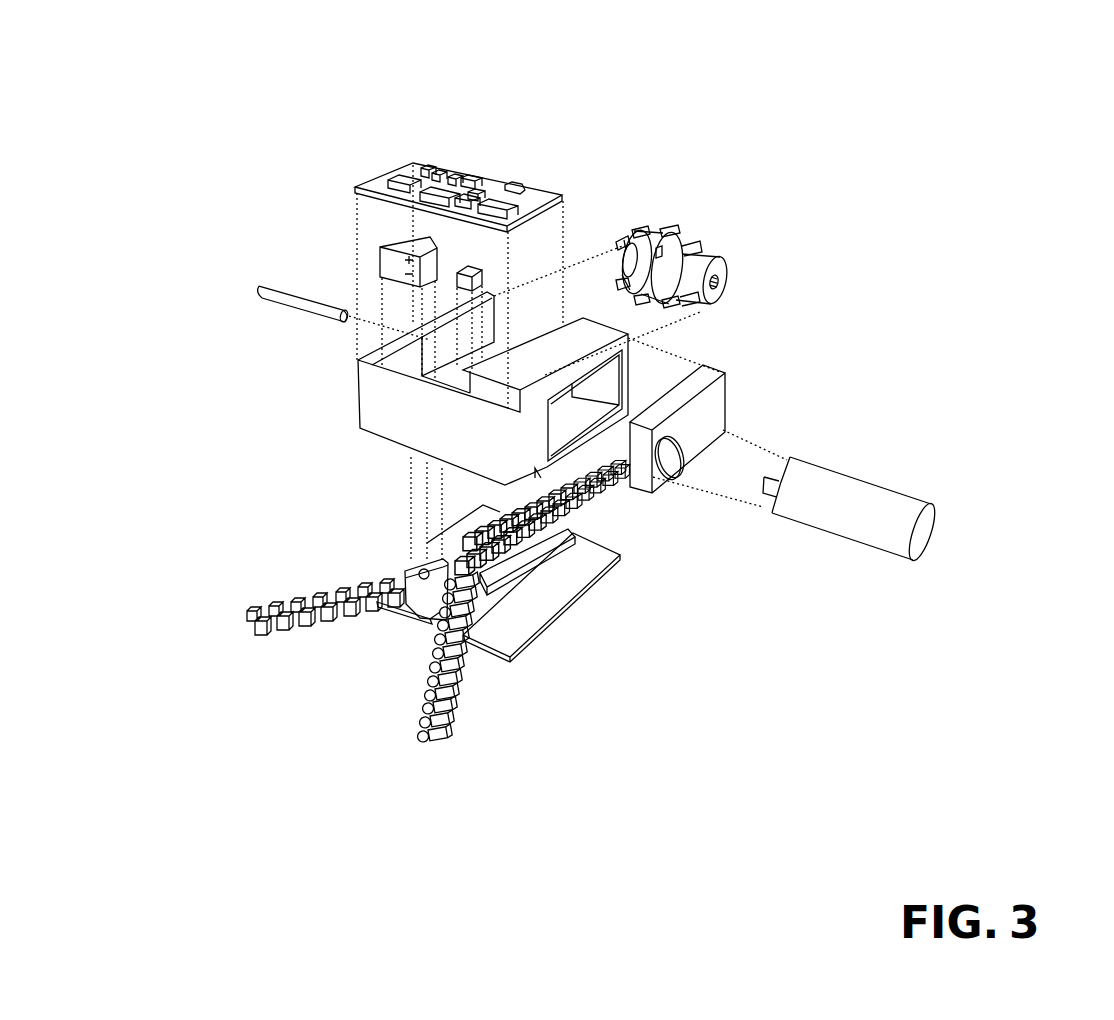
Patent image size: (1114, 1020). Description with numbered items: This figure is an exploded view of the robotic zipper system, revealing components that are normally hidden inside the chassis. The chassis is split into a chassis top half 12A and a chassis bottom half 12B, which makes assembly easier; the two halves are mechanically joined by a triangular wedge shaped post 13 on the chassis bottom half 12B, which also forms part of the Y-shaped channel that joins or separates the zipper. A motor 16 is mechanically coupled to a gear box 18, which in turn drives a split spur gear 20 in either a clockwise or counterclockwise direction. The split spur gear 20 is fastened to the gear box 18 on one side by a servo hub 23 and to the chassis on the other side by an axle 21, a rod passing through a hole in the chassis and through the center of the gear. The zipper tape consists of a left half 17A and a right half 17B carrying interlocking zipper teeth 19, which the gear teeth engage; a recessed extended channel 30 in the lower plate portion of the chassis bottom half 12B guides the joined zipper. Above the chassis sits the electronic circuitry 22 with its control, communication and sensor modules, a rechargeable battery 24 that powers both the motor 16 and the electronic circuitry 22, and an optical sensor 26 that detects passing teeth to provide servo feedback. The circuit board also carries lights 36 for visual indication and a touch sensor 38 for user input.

The chassis top half 12A is at (357, 393).
The chassis bottom half 12B is at (523, 653).
The triangular wedge shaped post 13 is at (410, 615).
The motor 16 is at (930, 528).
The left half of zipper tape 17A is at (438, 741).
The right half of zipper tape 17B is at (243, 618).
The gear box 18 is at (727, 403).
The zipper teeth 19 is at (315, 596).
The split spur gear 20 is at (677, 227).
The axle 21 is at (280, 288).
The electronic circuitry 22 is at (381, 179).
The servo hub 23 is at (723, 277).
The rechargeable battery 24 is at (378, 257).
The optical sensor 26 is at (487, 272).
The recessed extended channel 30 is at (577, 525).
The lights 36 is at (500, 185).
The touch sensor 38 is at (397, 175).